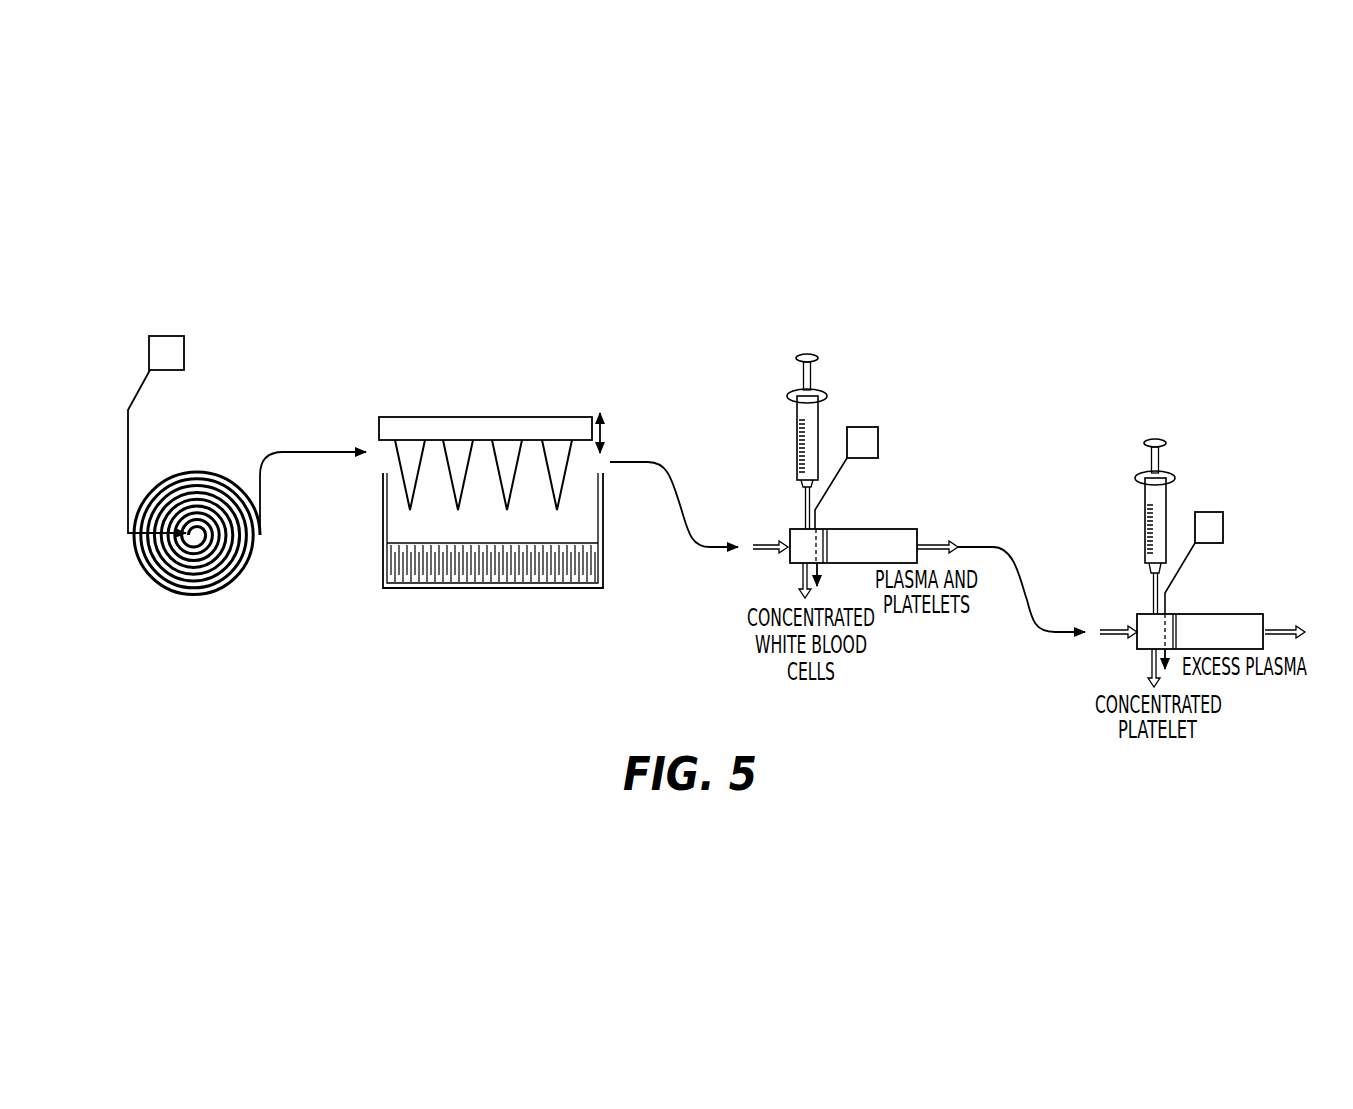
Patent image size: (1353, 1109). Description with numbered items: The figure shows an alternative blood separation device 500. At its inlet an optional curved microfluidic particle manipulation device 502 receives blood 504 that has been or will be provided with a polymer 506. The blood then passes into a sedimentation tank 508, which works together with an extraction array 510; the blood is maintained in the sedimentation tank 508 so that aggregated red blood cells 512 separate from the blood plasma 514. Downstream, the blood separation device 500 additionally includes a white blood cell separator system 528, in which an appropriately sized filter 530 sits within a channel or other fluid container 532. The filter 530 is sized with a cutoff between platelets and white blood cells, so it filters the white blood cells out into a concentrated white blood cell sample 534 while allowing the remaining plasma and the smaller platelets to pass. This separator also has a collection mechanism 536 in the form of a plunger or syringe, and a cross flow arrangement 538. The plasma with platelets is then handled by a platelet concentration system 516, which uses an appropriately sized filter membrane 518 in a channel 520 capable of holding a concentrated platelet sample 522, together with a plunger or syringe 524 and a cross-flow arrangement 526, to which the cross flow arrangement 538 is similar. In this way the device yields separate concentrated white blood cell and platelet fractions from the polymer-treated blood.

The blood separation device 500 is at (264, 298).
The curved microfluidic particle manipulation device 502 is at (197, 598).
The blood 504 is at (110, 446).
The polymer 506 is at (184, 352).
The sedimentation tank 508 is at (383, 553).
The extraction array 510 is at (485, 415).
The aggregated red blood cells 512 is at (587, 568).
The blood plasma 514 is at (596, 524).
The platelet concentration system 516 is at (1102, 487).
The filter membrane 518 is at (1188, 620).
The channel 520 is at (1117, 659).
The concentrated platelet sample 522 is at (1148, 620).
The plunger or syringe 524 is at (1177, 477).
The cross-flow arrangement 526 is at (1223, 527).
The white blood cell separator system 528 is at (755, 402).
The filter 530 is at (838, 530).
The channel or fluid container 532 is at (770, 572).
The concentrated white blood cell sample 534 is at (802, 533).
The collection mechanism 536 is at (827, 392).
The cross flow arrangement 538 is at (878, 440).